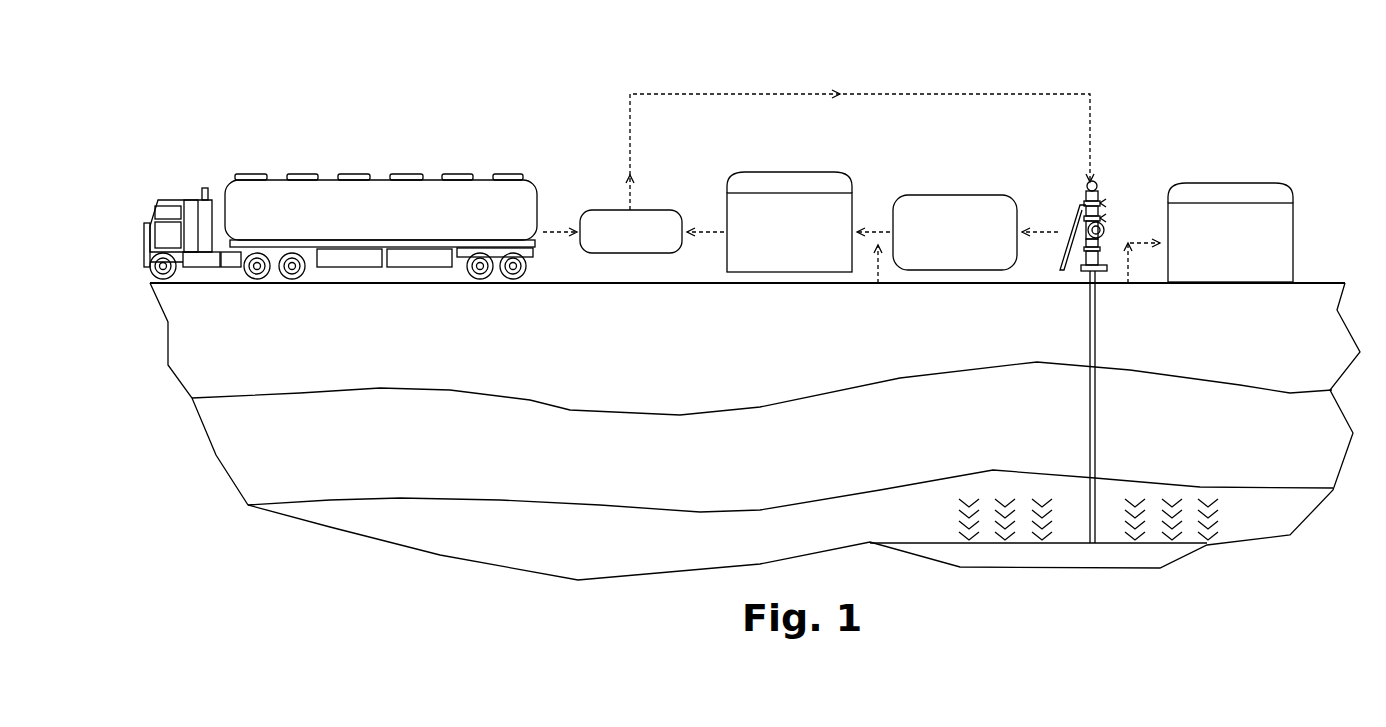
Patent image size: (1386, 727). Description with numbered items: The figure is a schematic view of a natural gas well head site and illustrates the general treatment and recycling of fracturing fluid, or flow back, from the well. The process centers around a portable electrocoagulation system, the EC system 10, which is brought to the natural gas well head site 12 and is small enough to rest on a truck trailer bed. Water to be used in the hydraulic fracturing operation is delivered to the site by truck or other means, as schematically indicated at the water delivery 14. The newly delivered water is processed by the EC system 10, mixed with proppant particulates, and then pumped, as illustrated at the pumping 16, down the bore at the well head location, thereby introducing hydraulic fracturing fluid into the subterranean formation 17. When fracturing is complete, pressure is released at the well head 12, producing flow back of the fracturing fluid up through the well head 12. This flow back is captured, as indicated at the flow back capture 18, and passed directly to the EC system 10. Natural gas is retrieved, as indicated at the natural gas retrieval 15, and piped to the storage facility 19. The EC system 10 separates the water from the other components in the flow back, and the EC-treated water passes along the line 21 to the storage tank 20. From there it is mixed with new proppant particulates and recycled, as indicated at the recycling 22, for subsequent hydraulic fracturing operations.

The electrocoagulation (EC) system 10 is at (937, 192).
The natural gas well head site 12 is at (1124, 316).
The water delivery 14 is at (340, 178).
The natural gas retrieval 15 is at (1128, 283).
The pumping 16 is at (612, 160).
The subterranean formation 17 is at (760, 389).
The flow back capture 18 is at (1033, 171).
The storage facility 19 is at (1237, 190).
The storage tank 20 is at (769, 192).
The line 21 is at (877, 290).
The recycling 22 is at (860, 107).